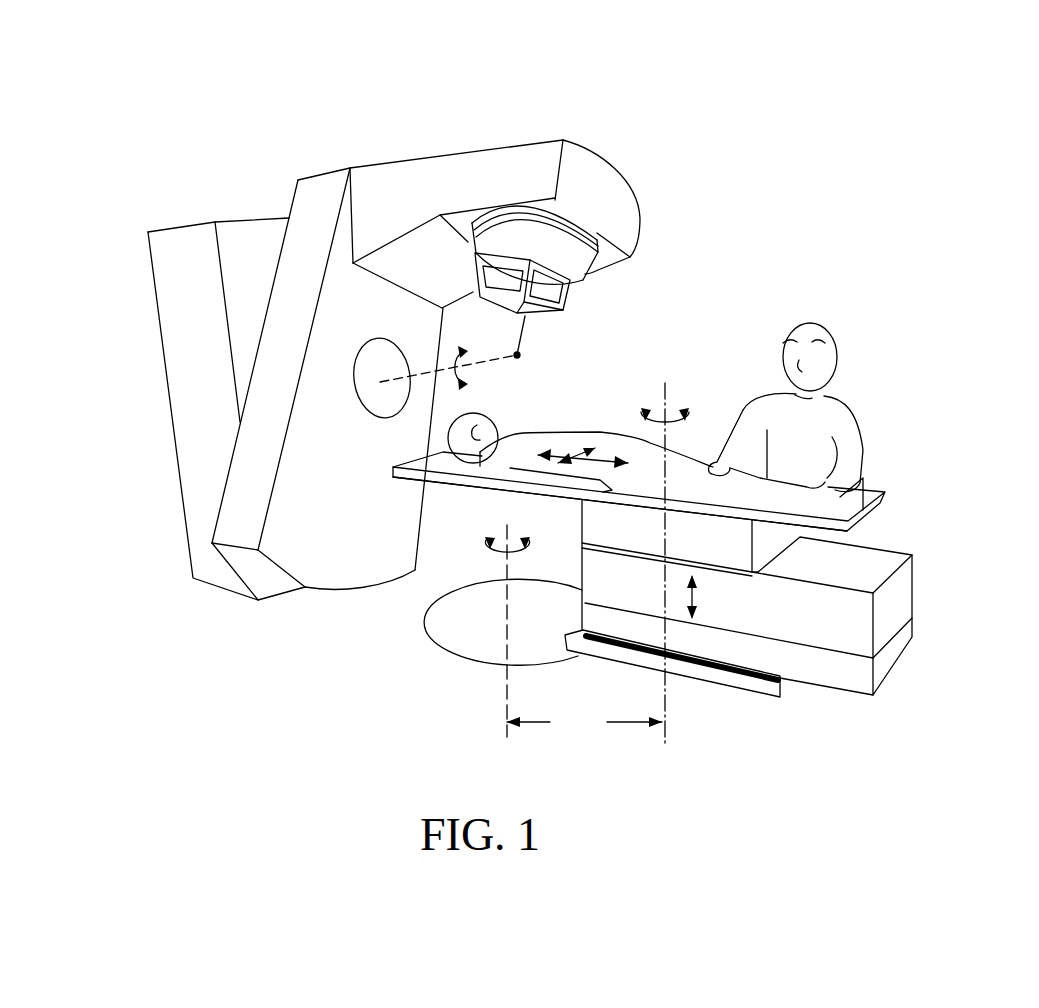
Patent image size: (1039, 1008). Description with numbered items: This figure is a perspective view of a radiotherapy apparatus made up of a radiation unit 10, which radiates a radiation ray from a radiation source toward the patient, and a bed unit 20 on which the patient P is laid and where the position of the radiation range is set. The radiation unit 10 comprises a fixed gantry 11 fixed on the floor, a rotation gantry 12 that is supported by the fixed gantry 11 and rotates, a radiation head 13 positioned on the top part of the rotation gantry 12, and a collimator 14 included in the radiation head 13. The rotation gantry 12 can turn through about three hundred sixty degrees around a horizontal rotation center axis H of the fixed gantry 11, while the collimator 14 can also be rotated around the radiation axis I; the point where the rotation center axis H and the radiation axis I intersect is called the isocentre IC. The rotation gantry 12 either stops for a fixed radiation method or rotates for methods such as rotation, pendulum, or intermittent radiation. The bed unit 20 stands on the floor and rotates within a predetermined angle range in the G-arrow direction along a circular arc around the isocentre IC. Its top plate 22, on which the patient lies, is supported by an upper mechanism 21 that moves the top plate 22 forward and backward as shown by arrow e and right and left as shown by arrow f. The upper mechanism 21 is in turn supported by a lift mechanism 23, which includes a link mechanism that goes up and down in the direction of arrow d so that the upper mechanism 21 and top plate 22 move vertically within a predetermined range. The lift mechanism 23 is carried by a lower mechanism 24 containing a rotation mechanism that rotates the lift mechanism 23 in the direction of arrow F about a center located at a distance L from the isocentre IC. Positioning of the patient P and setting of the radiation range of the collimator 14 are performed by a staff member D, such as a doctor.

The radiation unit 10 is at (545, 130).
The fixed gantry 11 is at (178, 225).
The rotation gantry 12 is at (322, 175).
The radiation head 13 is at (617, 170).
The collimator 14 is at (595, 272).
The bed unit 20 is at (900, 544).
The upper mechanism 21 is at (592, 517).
The top plate 22 is at (872, 483).
The lift mechanism 23 is at (853, 620).
The lower mechanism 24 is at (743, 680).
The radiation axis I is at (530, 333).
The isocentre IC is at (517, 360).
The rotation center axis H is at (448, 359).
The patient P is at (578, 455).
The right and left direction arrow f is at (580, 450).
The forward and backward direction arrow e is at (602, 458).
The staff D is at (838, 407).
The rotation direction arrow F is at (666, 556).
The bed rotation direction arrow G is at (498, 625).
The distance L is at (584, 723).
The up and down direction arrow d is at (701, 597).